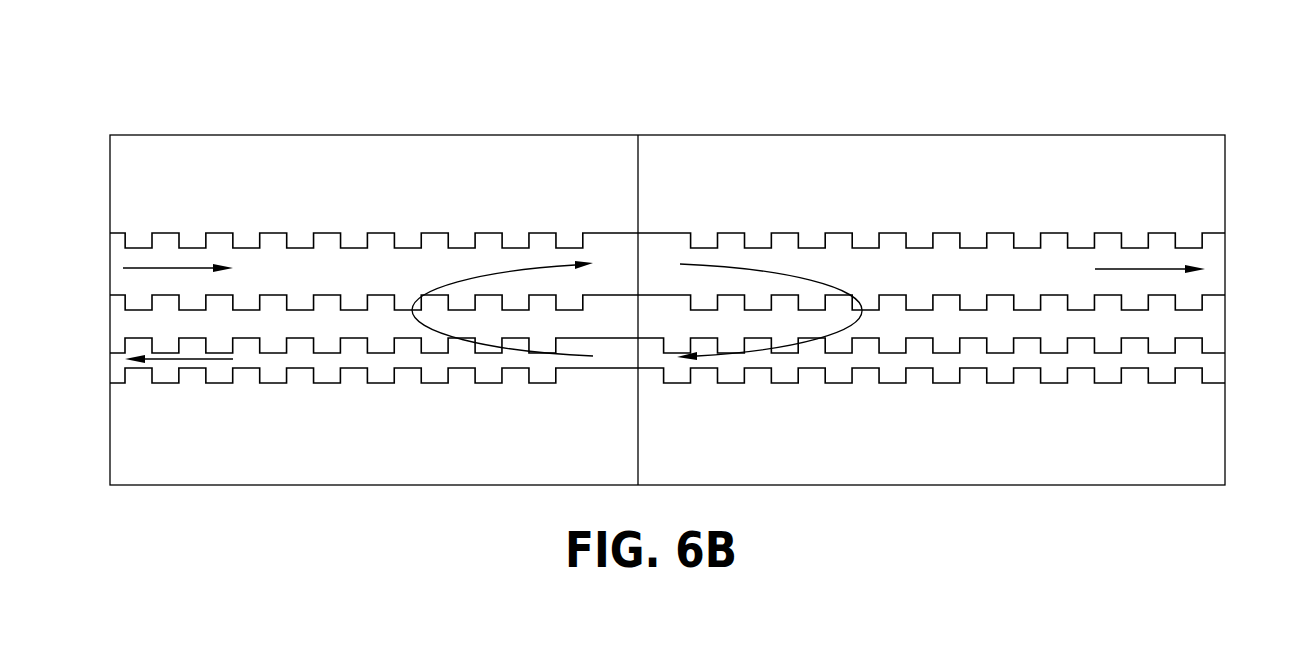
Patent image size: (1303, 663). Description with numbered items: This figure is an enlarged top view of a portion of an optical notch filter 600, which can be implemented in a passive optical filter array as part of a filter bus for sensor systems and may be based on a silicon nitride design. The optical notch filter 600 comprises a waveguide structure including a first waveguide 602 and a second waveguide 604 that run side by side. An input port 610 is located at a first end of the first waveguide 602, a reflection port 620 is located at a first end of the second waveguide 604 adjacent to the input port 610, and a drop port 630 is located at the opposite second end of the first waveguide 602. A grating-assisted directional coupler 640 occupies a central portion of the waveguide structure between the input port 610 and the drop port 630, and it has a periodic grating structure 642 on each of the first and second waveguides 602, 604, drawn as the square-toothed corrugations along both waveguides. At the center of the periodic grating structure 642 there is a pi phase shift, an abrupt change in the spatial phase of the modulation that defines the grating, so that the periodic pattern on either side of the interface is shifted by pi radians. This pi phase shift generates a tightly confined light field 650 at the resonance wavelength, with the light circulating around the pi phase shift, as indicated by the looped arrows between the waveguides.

The optical notch filter 600 is at (338, 83).
The first waveguide 602 is at (667, 200).
The second waveguide 604 is at (330, 398).
The input port 610 is at (110, 262).
The reflection port 620 is at (110, 364).
The drop port 630 is at (1225, 253).
The grating-assisted directional coupler 640 is at (435, 200).
The periodic grating structure 642 is at (952, 233).
The tightly confined light field 650 is at (863, 316).